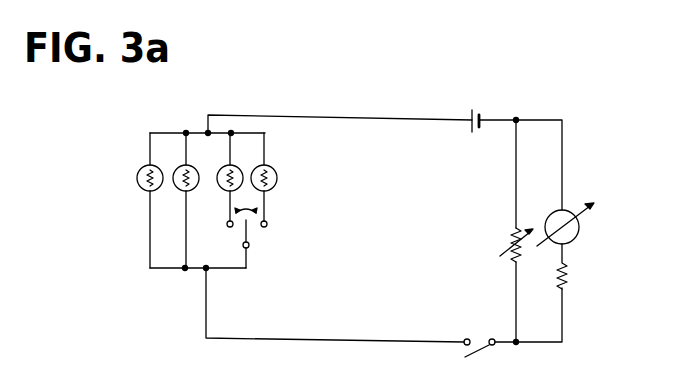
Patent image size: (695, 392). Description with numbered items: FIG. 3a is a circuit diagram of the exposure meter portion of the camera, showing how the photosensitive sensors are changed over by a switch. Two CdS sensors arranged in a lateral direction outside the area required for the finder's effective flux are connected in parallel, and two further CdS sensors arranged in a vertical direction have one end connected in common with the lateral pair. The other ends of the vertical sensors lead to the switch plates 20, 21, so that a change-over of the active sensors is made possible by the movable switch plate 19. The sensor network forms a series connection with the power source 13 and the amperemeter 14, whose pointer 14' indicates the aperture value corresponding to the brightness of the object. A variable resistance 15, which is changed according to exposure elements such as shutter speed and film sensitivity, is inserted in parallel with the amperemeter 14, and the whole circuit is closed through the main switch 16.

The power source 13 is at (472, 108).
The amperemeter 14 is at (569, 226).
The pointer 14' is at (590, 224).
The variable resistance 15 is at (508, 236).
The main switch 16 is at (482, 365).
The switch plate 19 is at (249, 246).
The switch plate 20 is at (267, 224).
The switch plate 21 is at (229, 227).